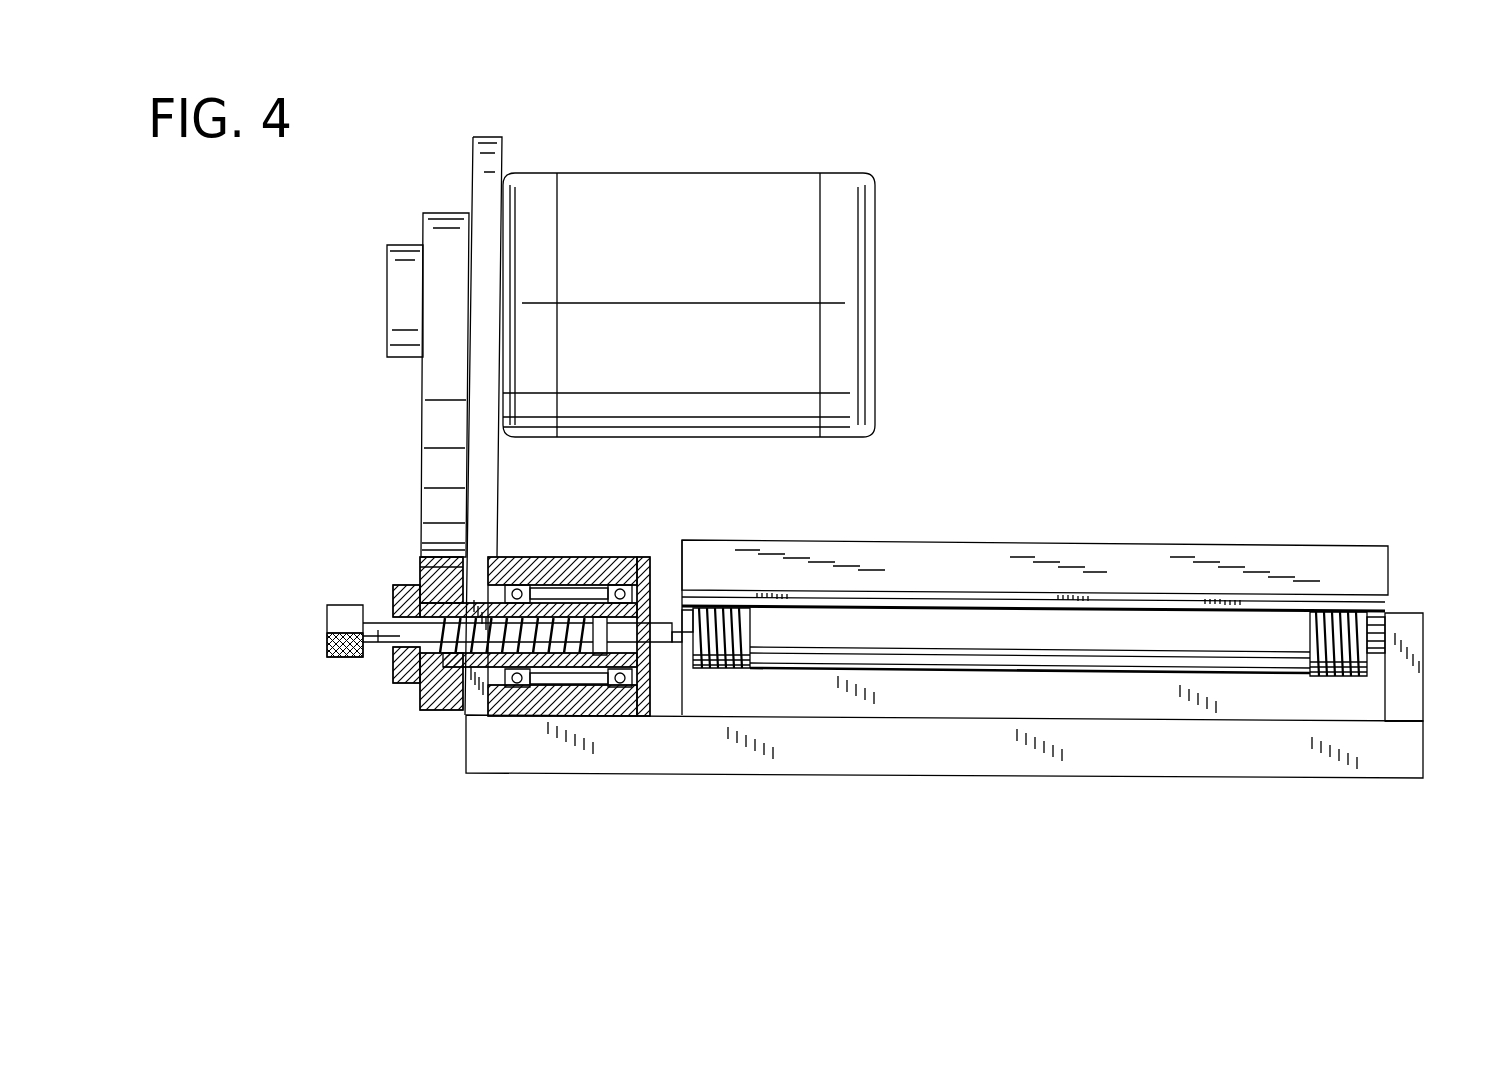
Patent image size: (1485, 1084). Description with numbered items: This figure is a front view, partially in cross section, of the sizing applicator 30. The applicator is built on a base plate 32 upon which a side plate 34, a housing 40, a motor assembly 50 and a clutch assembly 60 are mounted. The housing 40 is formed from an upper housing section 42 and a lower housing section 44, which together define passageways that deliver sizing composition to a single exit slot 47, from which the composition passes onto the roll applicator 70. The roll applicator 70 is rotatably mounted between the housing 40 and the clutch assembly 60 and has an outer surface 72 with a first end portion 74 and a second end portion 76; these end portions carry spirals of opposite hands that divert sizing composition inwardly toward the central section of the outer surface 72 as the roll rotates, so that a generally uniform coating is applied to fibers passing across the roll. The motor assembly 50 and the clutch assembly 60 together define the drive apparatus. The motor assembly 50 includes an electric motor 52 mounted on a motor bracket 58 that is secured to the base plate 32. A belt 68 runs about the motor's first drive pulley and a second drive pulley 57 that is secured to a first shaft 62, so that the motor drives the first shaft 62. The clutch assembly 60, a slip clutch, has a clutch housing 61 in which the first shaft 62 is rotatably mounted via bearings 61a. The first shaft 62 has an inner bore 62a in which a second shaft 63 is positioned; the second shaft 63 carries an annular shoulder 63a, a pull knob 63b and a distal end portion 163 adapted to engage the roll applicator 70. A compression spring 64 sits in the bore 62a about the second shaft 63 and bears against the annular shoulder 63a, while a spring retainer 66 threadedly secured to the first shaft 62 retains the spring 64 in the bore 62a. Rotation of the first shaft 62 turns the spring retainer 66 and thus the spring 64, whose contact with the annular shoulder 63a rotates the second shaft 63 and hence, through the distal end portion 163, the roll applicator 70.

The sizing applicator 30 is at (1113, 518).
The base plate 32 is at (985, 753).
The side plate 34 is at (1410, 707).
The housing 40 is at (1372, 567).
The upper housing section 42 is at (1288, 560).
The lower housing section 44 is at (1145, 702).
The exit slot 47 is at (1190, 607).
The motor assembly 50 is at (923, 224).
The electric motor 52 is at (663, 193).
The second drive pulley 57 is at (418, 577).
The motor bracket 58 is at (488, 163).
The clutch assembly 60 is at (302, 593).
The clutch housing 61 is at (550, 700).
The bearings 61a is at (507, 683).
The first shaft 62 is at (572, 608).
The inner bore 62a is at (545, 620).
The second shaft 63 is at (373, 642).
The annular shoulder 63a is at (600, 618).
The pull knob 63b is at (340, 630).
The compression spring 64 is at (422, 712).
The spring retainer 66 is at (392, 613).
The belt 68 is at (440, 380).
The roll applicator 70 is at (882, 635).
The outer surface 72 is at (970, 607).
The first end portion 74 is at (725, 670).
The second end portion 76 is at (1335, 686).
The distal end portion 163 is at (680, 645).